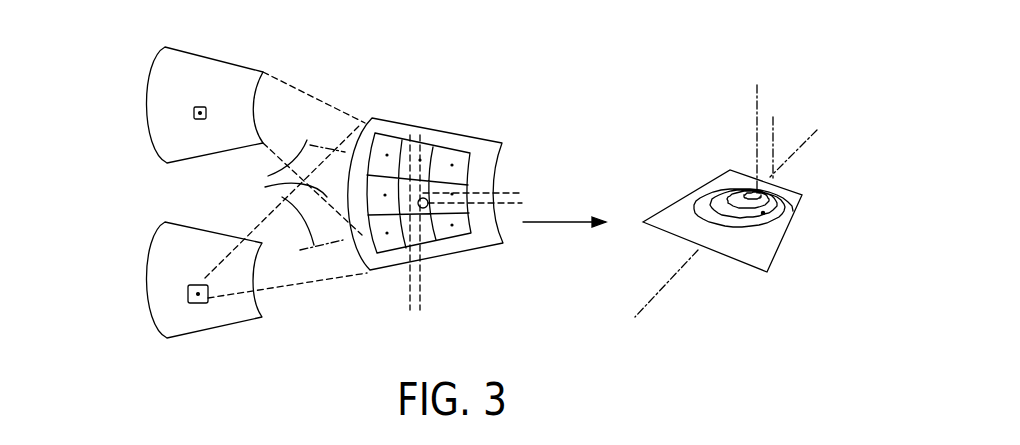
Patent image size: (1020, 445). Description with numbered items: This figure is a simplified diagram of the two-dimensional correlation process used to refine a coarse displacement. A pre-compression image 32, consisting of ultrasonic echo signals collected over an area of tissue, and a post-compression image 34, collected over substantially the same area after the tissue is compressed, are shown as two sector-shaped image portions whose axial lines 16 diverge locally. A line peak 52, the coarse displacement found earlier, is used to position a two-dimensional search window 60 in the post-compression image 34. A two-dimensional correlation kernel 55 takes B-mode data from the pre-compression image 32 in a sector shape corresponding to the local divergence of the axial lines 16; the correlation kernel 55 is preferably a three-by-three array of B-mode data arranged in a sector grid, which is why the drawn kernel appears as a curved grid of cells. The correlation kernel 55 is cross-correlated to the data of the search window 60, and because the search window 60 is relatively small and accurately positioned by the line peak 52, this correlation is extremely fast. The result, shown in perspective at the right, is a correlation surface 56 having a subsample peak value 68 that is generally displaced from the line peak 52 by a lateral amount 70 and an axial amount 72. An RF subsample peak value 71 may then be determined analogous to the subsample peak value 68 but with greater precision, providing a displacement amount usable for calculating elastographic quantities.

The axial lines 16 is at (291, 195).
The pre-compression image 32 is at (193, 122).
The post-compression image 34 is at (206, 302).
The line peak 52 is at (458, 188).
The two-dimensional correlation kernel 55 is at (341, 134).
The correlation surface 56 is at (722, 212).
The two-dimensional search window 60 is at (348, 251).
The subsample peak value 68 is at (630, 200).
The lateral amount 70 is at (498, 198).
The RF subsample peak value 71 is at (640, 165).
The axial amount 72 is at (415, 246).